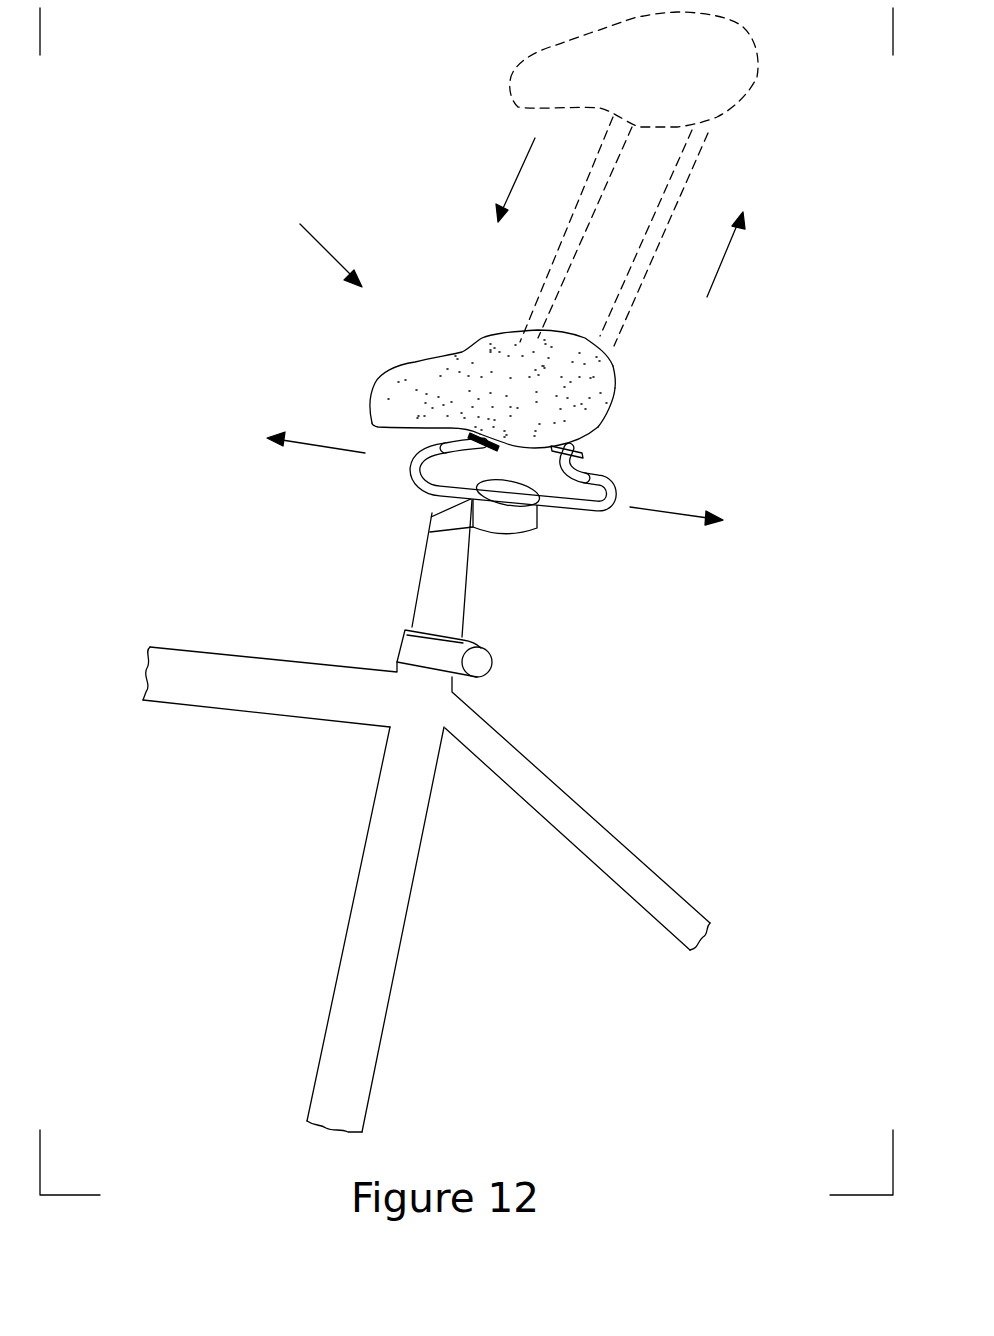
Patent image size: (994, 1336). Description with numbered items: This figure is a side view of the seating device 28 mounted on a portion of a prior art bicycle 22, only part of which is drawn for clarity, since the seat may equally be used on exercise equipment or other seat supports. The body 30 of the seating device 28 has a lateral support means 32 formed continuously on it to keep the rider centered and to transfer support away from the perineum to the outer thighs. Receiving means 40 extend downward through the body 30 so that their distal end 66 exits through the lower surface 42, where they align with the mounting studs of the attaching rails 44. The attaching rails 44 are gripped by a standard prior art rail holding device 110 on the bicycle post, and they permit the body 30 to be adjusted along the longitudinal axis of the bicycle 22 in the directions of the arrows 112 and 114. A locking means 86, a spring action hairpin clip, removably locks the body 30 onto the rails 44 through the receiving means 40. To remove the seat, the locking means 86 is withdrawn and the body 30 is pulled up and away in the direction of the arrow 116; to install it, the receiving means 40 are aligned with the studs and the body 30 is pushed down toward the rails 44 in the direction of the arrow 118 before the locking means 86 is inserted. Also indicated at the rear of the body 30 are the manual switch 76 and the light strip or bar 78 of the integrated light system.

The prior art bicycle 22 is at (217, 667).
The seating device 28 is at (483, 378).
The body 30 is at (460, 362).
The lateral support means 32 is at (373, 424).
The receiving means 40 is at (597, 441).
The lower surface 42 is at (520, 447).
The attaching rails 44 is at (560, 503).
The distal end 66 is at (590, 458).
The manual switch 76 is at (613, 407).
The light strip or bar 78 is at (617, 380).
The locking means 86 is at (600, 453).
The prior art rail holding device 110 is at (500, 527).
The arrow 112 is at (308, 447).
The arrow 114 is at (668, 513).
The arrow 116 is at (712, 285).
The arrow 118 is at (520, 158).